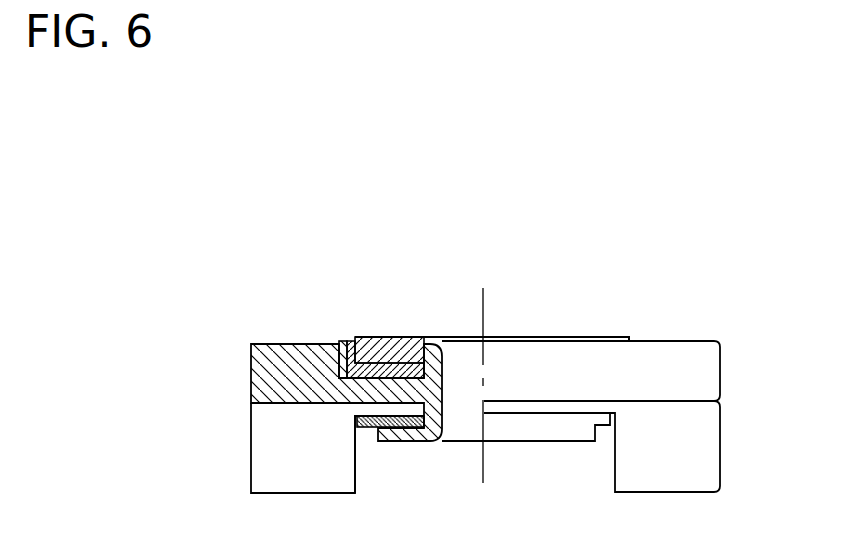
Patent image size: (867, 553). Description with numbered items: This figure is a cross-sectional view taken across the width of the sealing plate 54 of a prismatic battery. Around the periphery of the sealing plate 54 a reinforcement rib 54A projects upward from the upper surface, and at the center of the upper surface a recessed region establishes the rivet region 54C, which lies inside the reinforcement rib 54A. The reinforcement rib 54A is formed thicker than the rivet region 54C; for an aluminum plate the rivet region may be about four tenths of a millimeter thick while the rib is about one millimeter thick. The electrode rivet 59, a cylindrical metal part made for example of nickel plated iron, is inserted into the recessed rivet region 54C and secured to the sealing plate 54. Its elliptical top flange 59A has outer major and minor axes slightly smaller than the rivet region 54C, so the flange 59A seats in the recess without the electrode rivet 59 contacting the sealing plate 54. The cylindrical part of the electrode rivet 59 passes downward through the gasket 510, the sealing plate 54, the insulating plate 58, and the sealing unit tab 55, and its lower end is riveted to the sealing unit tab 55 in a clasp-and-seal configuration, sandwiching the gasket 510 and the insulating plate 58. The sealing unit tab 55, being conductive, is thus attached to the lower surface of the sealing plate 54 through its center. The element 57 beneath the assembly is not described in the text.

The sealing plate 54 is at (262, 386).
The reinforcement rib 54A is at (282, 347).
The rivet region 54C is at (388, 376).
The gasket 510 is at (344, 341).
The electrode rivet 59 is at (418, 340).
The flange 59A is at (382, 338).
The lower member 57 is at (258, 466).
The insulating plate 58 is at (400, 411).
The sealing unit tab 55 is at (372, 430).